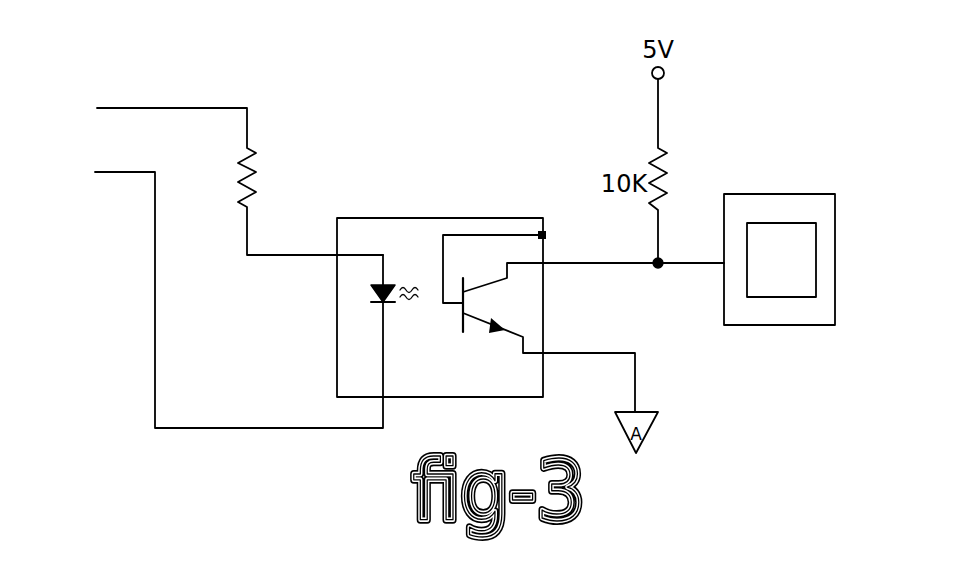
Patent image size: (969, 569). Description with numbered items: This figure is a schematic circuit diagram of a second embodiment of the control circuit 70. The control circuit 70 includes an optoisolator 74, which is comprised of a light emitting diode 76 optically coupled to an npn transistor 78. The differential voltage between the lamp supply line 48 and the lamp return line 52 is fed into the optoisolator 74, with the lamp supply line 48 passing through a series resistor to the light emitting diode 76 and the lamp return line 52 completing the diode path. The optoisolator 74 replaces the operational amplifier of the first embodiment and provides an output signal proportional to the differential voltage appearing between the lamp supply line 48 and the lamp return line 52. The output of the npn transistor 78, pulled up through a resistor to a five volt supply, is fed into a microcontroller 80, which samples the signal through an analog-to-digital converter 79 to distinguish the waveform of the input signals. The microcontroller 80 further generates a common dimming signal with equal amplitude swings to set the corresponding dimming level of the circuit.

The lamp supply line 48 is at (180, 108).
The lamp return line 52 is at (110, 172).
The control circuit 70 is at (404, 96).
The optoisolator 74 is at (392, 196).
The light emitting diode 76 is at (390, 282).
The npn transistor 78 is at (462, 312).
The analog-to-digital converter 79 is at (816, 253).
The microcontroller 80 is at (753, 194).